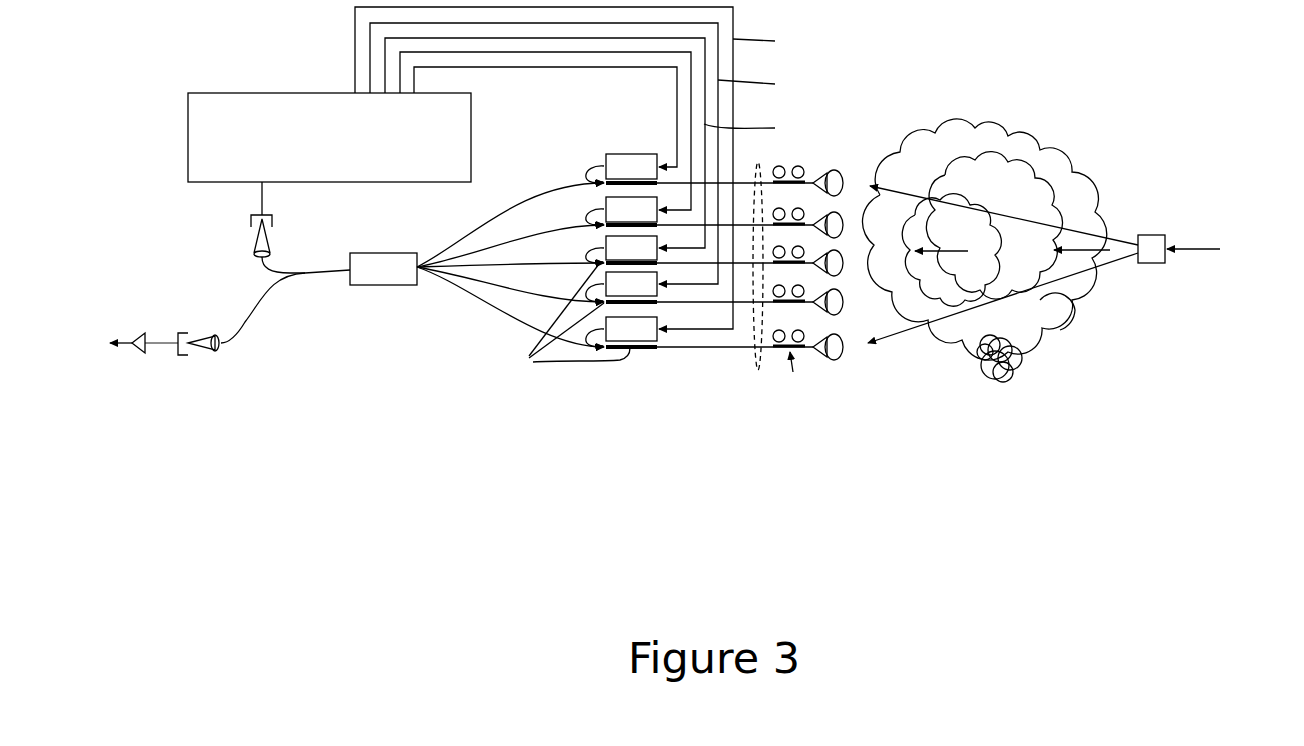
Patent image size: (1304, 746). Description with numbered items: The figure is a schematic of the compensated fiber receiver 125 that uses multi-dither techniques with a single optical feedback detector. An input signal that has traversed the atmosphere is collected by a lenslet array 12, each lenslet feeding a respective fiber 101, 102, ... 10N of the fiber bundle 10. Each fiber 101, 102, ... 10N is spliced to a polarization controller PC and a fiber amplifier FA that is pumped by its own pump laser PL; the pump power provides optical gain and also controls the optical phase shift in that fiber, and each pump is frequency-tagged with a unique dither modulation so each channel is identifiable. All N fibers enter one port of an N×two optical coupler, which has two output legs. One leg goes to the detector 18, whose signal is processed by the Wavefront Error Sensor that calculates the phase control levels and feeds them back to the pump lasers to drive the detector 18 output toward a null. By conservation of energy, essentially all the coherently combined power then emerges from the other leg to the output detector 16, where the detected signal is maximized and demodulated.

The fiber receiver architecture 125 is at (641, 231).
The fiber bundle 10 is at (760, 281).
The fiber 10N is at (500, 225).
The fiber 102 is at (506, 292).
The fiber 101 is at (697, 350).
The lenslet array 12 is at (842, 153).
The output detector 16 is at (184, 365).
The WES detector 18 is at (275, 222).